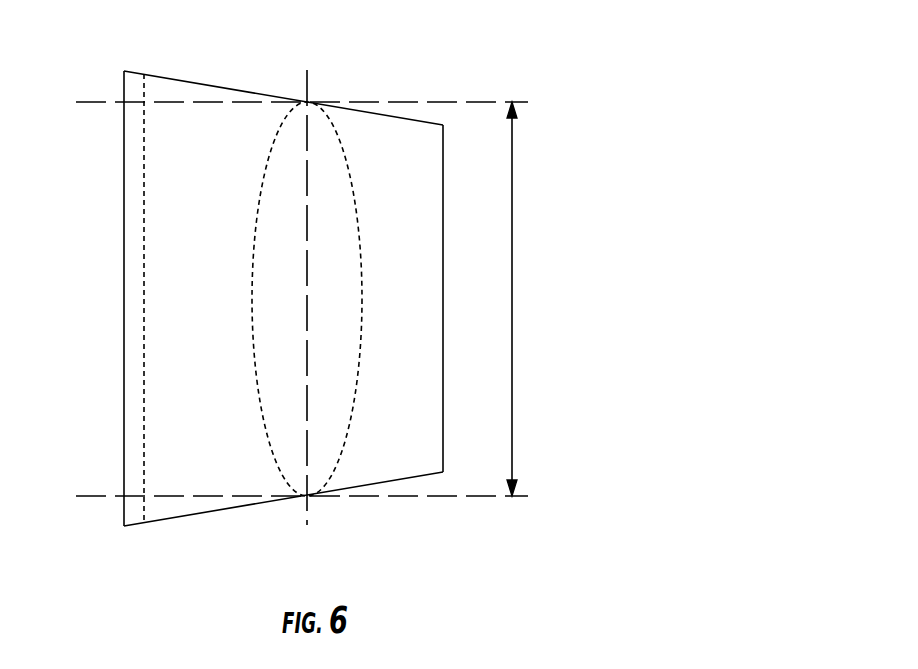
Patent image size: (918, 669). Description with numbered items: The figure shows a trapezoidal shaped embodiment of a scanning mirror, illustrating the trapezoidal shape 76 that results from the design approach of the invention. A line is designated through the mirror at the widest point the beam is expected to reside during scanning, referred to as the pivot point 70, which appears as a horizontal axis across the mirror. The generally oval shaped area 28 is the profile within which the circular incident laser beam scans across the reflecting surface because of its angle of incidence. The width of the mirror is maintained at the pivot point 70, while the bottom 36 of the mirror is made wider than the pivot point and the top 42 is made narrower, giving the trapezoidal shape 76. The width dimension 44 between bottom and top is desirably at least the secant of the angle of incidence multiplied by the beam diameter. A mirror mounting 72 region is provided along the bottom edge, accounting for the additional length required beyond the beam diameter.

The trapezoidal shape 76 is at (417, 70).
The mirror mounting 72 is at (132, 391).
The bottom 36 is at (123, 512).
The oval shaped profile or area 28 is at (264, 449).
The pivot point 70 is at (305, 497).
The top 42 is at (443, 367).
The width dimension 44 is at (512, 271).